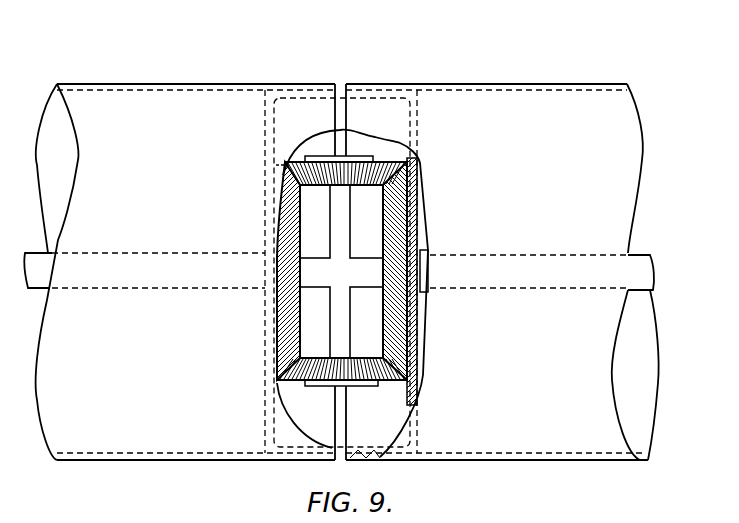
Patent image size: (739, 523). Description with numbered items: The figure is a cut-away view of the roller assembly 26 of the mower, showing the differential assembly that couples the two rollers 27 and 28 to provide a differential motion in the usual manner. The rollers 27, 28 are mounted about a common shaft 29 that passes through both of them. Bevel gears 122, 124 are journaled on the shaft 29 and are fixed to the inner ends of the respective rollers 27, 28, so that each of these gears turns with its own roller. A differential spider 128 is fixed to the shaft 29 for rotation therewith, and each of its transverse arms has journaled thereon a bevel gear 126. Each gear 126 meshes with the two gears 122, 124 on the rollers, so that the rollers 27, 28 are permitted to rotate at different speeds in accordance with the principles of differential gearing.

The coupling assembly 26 is at (194, 70).
The roller 27 is at (161, 349).
The roller 28 is at (538, 347).
The shaft 29 is at (532, 284).
The bevel gear 122 is at (281, 346).
The bevel gear 124 is at (410, 345).
The bevel gear 126 is at (390, 167).
The differential spider 128 is at (330, 225).